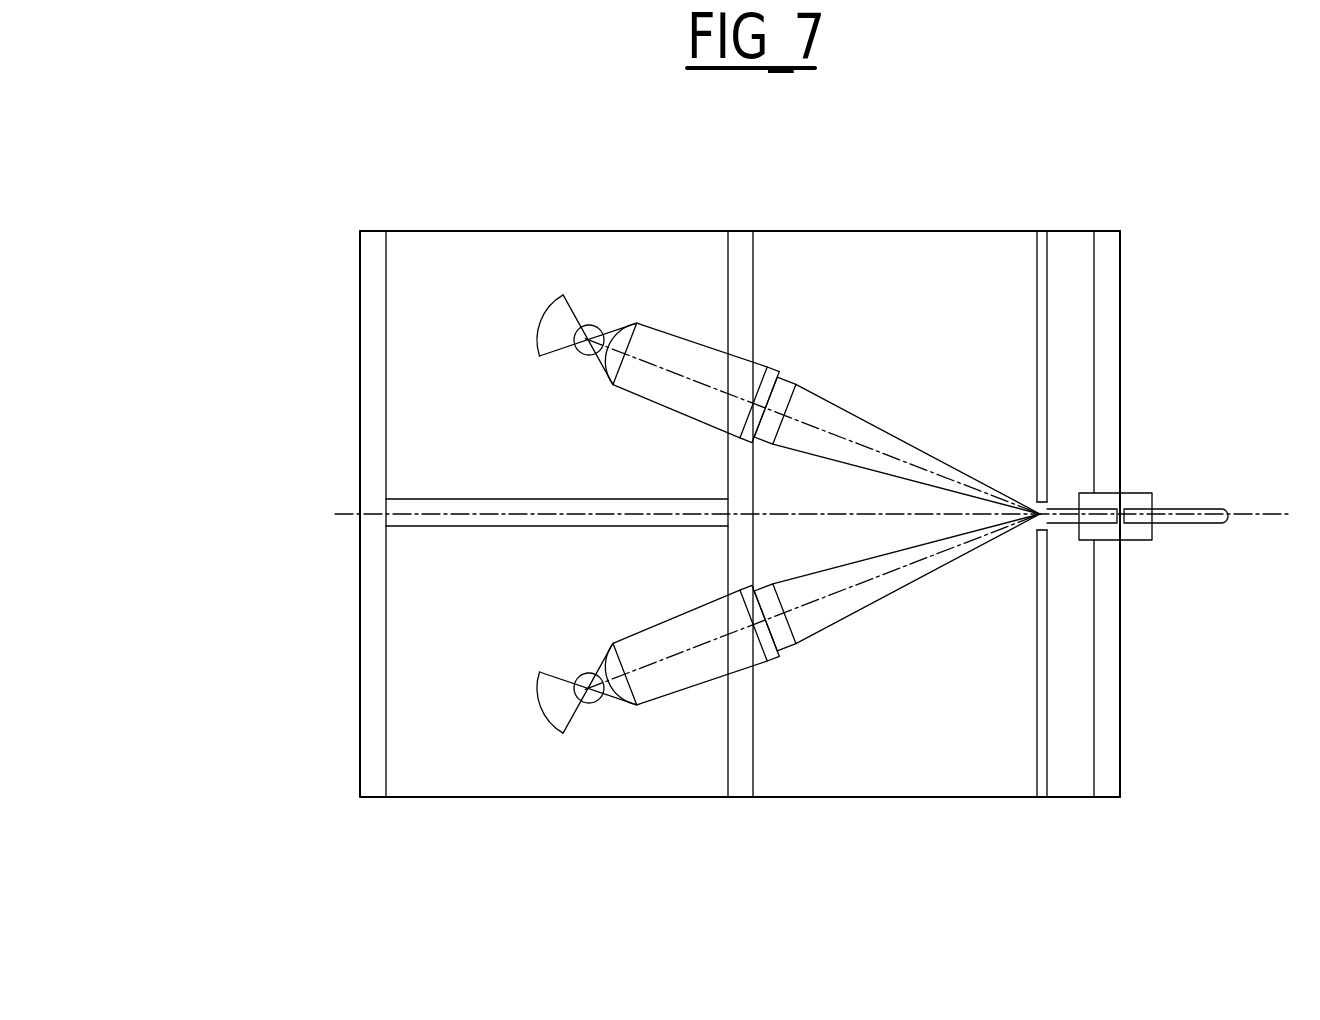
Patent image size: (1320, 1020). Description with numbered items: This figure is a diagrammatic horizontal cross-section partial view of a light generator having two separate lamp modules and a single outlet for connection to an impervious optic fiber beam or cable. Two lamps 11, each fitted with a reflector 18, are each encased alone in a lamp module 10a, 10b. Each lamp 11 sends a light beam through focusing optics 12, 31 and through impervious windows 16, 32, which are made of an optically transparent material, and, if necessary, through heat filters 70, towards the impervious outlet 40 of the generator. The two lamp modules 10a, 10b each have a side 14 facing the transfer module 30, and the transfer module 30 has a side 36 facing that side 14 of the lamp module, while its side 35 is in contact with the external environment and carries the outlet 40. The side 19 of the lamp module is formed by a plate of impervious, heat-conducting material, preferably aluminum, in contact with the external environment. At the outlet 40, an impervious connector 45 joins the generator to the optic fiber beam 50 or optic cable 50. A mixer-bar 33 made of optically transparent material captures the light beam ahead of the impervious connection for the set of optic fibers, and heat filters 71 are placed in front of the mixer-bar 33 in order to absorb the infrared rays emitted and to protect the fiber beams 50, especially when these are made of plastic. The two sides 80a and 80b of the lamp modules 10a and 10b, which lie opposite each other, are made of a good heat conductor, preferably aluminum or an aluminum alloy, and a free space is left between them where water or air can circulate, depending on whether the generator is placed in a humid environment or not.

The lamp module 10a is at (286, 658).
The lamp module 10b is at (325, 368).
The lamp 11 is at (593, 325).
The focusing optic system 12 is at (648, 318).
The side 14 is at (728, 260).
The sealed window 16 is at (672, 336).
The reflector 18 is at (563, 293).
The side 19 is at (370, 285).
The transfer module 30 is at (933, 190).
The focusing optic system 31 is at (836, 400).
The sealed window 32 is at (762, 367).
The mixer-bar 33 is at (1065, 508).
The side 35 is at (1108, 272).
The side 36 is at (754, 258).
The outlet 40 is at (1147, 570).
The impervious connector 45 is at (1135, 493).
The optic fiber beam 50 is at (1226, 509).
The heat filter 70 is at (790, 373).
The heat filter 71 is at (1038, 500).
The side 80a is at (473, 527).
The side 80b is at (450, 499).